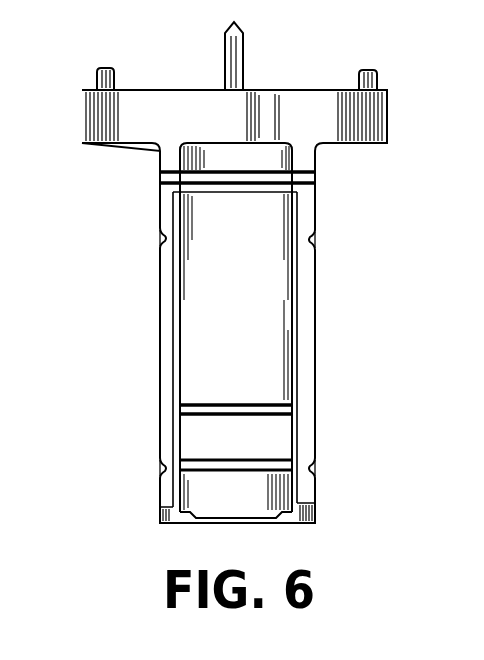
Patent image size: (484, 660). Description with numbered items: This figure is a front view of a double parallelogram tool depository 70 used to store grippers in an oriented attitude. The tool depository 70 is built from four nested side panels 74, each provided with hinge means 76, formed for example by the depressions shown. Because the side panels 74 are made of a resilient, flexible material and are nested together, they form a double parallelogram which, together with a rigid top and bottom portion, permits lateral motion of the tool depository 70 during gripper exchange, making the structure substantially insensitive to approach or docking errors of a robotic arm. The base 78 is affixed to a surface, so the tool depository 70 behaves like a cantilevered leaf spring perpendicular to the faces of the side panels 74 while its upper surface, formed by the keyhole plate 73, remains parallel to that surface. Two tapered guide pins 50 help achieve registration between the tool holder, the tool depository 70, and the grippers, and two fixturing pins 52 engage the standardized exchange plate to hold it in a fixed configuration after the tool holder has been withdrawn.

The tapered guide pin 50 is at (240, 28).
The fixturing pin 52 is at (98, 69).
The tool depository 70 is at (288, 115).
The keyhole plate 73 is at (187, 90).
The side panel 74 is at (221, 344).
The hinge means 76 is at (317, 242).
The base 78 is at (236, 499).